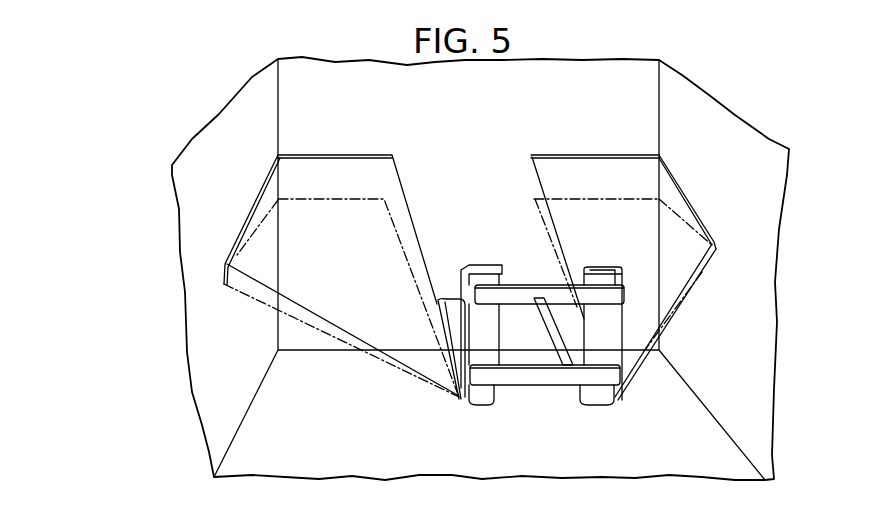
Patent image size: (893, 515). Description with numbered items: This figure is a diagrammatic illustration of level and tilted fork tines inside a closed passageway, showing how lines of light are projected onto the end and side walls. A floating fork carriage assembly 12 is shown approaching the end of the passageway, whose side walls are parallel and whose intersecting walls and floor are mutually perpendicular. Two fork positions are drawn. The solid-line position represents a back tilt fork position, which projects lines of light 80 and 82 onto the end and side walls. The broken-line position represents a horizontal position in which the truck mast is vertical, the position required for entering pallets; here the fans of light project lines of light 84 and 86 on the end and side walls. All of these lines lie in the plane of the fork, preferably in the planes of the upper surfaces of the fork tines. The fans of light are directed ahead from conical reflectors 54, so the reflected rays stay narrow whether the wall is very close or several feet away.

The fork carriage assembly 12 is at (543, 390).
The conical reflectors 54 is at (457, 397).
The line of light 80 is at (322, 153).
The line of light 82 is at (576, 156).
The line of light 84 is at (318, 197).
The line of light 86 is at (597, 197).